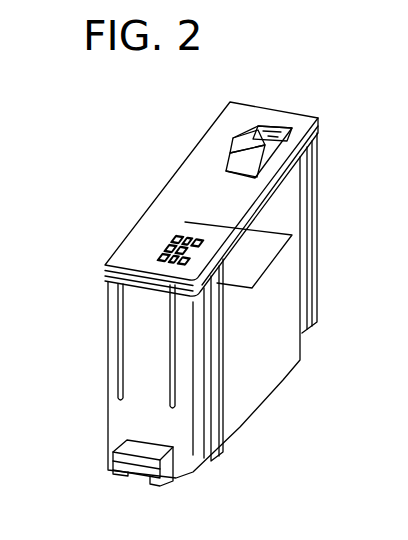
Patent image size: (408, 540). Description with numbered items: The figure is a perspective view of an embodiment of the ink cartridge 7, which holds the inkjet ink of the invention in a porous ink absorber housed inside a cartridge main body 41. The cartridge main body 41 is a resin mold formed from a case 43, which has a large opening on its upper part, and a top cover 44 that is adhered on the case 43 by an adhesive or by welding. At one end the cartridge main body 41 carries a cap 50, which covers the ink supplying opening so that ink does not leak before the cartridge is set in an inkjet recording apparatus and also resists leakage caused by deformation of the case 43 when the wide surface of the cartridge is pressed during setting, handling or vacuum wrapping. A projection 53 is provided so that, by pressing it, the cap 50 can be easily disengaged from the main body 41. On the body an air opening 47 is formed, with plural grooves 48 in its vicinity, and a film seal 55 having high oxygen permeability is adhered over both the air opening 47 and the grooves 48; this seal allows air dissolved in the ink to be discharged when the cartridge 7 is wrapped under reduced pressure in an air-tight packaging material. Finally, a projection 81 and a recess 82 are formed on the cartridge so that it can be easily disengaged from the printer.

The ink cartridge 7 is at (97, 305).
The cartridge main body 41 is at (128, 423).
The case 43 is at (144, 366).
The top cover 44 is at (186, 186).
The air opening 47 is at (180, 232).
The grooves 48 is at (170, 243).
The cap 50 is at (273, 360).
The projection 53 is at (112, 458).
The film seal 55 is at (251, 266).
The projection 81 is at (232, 160).
The recess 82 is at (268, 136).